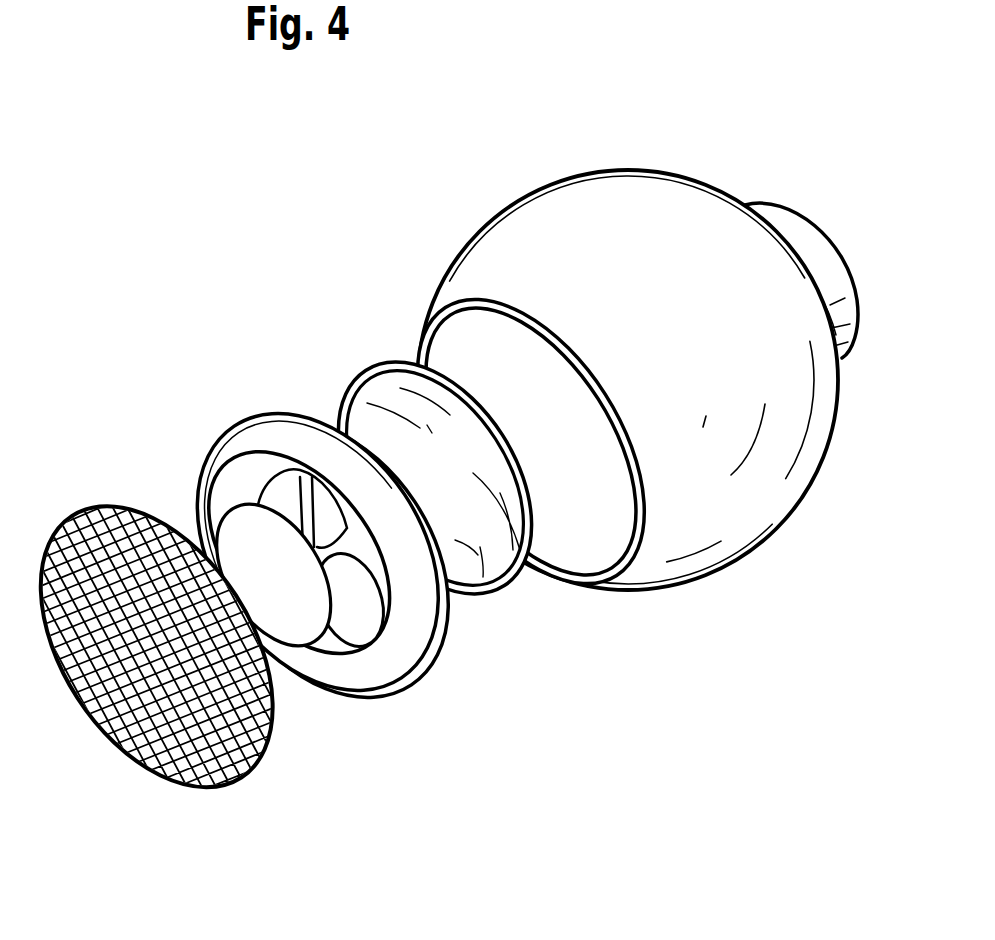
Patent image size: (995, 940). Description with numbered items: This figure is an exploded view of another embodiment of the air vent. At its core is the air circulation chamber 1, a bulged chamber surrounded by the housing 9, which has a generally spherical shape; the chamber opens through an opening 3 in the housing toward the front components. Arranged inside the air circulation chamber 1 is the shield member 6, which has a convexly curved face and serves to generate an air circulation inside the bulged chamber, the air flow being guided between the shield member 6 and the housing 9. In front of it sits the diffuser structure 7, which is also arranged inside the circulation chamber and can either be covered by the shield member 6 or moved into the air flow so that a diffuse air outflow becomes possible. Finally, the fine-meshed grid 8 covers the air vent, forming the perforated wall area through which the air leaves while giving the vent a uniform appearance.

The air circulation chamber 1 is at (538, 399).
The opening 3 is at (585, 547).
The shield member 6 is at (480, 603).
The diffuser structure 7 is at (405, 672).
The fine-meshed grid 8 is at (228, 777).
The housing 9 is at (780, 503).